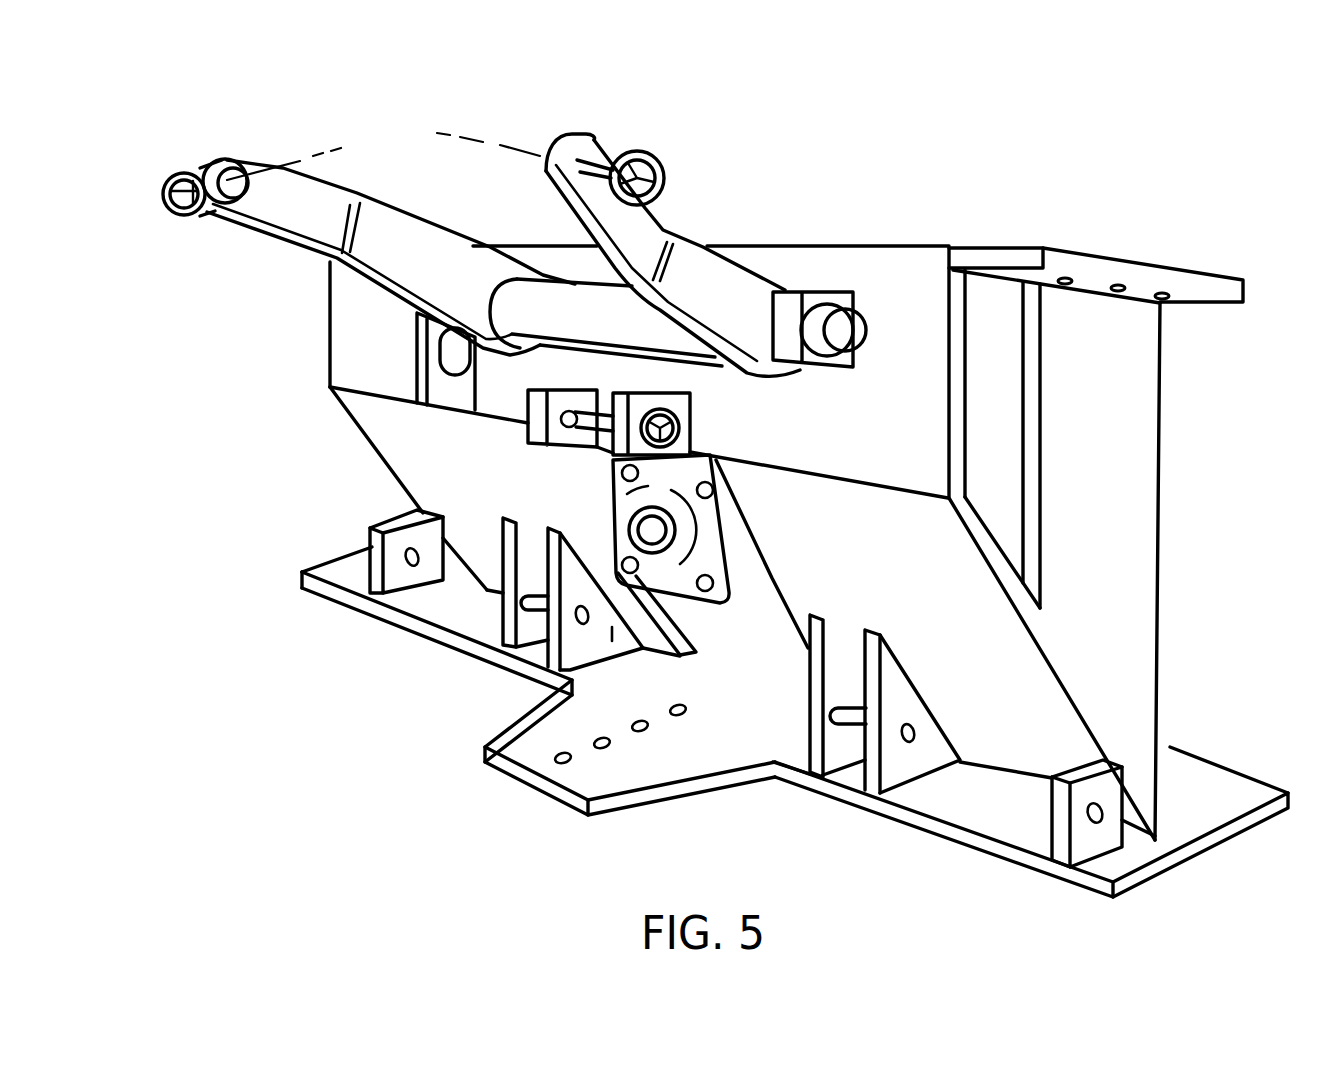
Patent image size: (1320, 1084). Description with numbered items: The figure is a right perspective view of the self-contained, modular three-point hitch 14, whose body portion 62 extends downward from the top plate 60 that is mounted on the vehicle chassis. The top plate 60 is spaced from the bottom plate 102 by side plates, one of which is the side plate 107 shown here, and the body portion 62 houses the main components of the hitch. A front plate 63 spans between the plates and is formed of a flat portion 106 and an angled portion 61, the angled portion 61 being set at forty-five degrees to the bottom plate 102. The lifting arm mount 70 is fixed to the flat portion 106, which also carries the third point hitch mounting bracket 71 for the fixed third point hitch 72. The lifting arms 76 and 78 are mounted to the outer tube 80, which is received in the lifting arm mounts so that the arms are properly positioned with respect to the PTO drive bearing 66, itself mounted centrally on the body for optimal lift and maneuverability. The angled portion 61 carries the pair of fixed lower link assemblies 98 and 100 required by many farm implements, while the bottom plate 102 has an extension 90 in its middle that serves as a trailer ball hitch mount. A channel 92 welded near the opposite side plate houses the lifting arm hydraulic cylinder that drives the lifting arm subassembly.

The three-point hitch 14 is at (957, 83).
The top plate 60 is at (1140, 258).
The angled portion 61 is at (983, 652).
The body portion 62 is at (1164, 562).
The front plate 63 is at (925, 297).
The PTO drive bearing 66 is at (687, 582).
The lifting arm mount 70 is at (820, 290).
The third point hitch mounting bracket 71 is at (682, 418).
The fixed third point hitch 72 is at (572, 445).
The lifting arm 76 is at (270, 212).
The lifting arm 78 is at (587, 130).
The outer tube 80 is at (573, 297).
The extension 90 is at (590, 786).
The channel 92 is at (440, 378).
The fixed lower link assembly 98 is at (897, 772).
The fixed lower link assembly 100 is at (528, 619).
The bottom plate 102 is at (1207, 817).
The flat portion 106 is at (936, 396).
The side plate 107 is at (1127, 463).